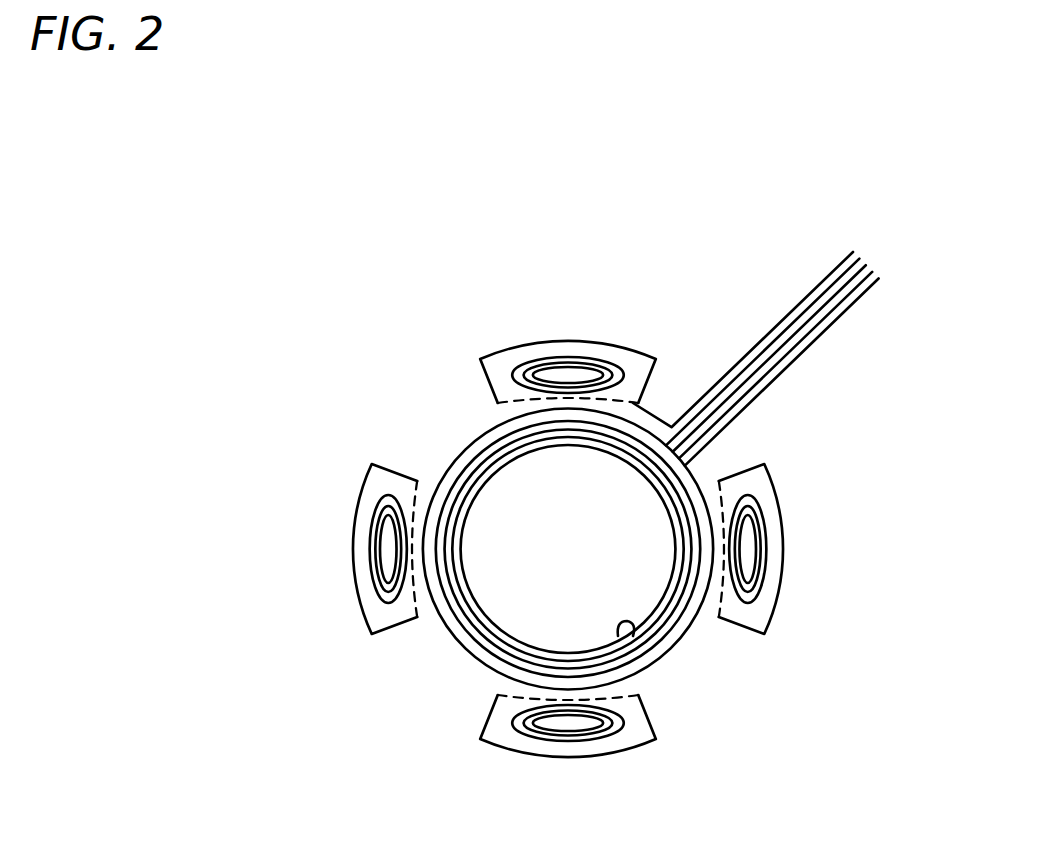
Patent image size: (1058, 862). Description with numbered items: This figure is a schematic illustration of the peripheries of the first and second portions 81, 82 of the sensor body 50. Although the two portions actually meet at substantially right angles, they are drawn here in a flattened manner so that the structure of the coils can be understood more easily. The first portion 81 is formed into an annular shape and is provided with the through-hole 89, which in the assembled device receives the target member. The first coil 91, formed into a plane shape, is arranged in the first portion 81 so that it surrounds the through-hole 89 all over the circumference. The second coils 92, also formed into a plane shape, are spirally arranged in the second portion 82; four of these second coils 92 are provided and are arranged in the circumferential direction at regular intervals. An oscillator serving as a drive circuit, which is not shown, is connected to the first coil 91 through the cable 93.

The sensor body 50 is at (587, 328).
The first portion 81 is at (492, 640).
The second portion 82 is at (505, 367).
The through-hole 89 is at (630, 632).
The first coil 91 is at (458, 613).
The second coil 92 is at (603, 367).
The cable 93 is at (813, 340).